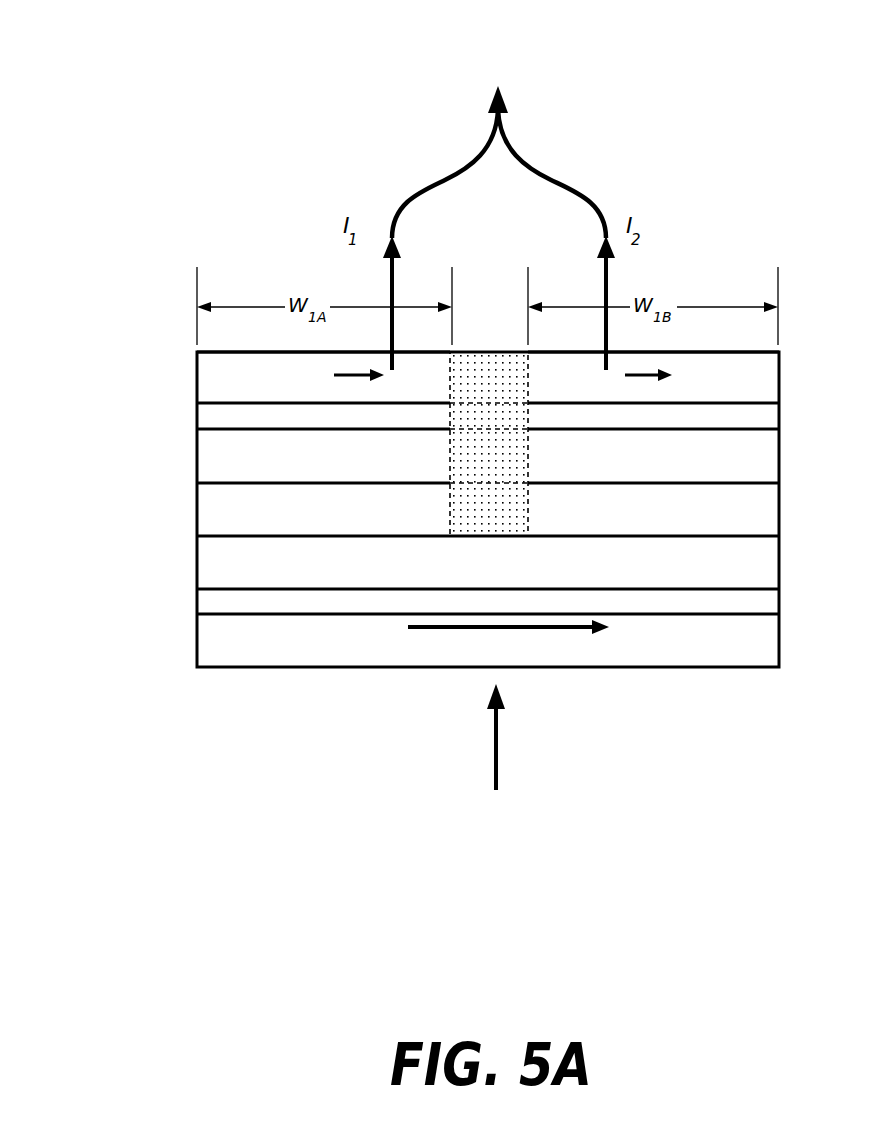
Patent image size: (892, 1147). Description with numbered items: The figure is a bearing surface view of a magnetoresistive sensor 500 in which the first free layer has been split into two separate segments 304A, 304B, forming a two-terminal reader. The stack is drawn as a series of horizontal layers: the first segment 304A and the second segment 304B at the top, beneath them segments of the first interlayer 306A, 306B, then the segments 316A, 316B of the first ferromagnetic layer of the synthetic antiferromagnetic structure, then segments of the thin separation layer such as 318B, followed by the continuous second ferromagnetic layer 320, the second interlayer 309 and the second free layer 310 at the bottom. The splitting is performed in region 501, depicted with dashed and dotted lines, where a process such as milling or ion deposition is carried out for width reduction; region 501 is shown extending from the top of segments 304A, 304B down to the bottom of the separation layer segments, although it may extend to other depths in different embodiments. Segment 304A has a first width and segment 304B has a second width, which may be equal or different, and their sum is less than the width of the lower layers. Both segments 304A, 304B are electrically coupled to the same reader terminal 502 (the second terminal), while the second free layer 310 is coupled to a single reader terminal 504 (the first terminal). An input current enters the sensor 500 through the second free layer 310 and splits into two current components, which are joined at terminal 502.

The sensor 500 is at (172, 184).
The region 501 is at (494, 460).
The reader terminal (Terminal 2) 502 is at (499, 130).
The reader terminal (Terminal 1) 504 is at (500, 797).
The first segment of first free layer 304A is at (323, 311).
The second segment of first free layer 304B is at (653, 312).
The first interlayer segment 306A is at (323, 413).
The first interlayer segment 306B is at (653, 414).
The first ferromagnetic layer (SAFL1) segment 316A is at (323, 443).
The first ferromagnetic layer (SAFL1) segment 316B is at (653, 444).
The separation layer segment 318B is at (488, 497).
The second ferromagnetic layer (SAFL2) 320 is at (488, 557).
The second interlayer 309 is at (488, 600).
The second free layer (FL2) 310 is at (488, 638).